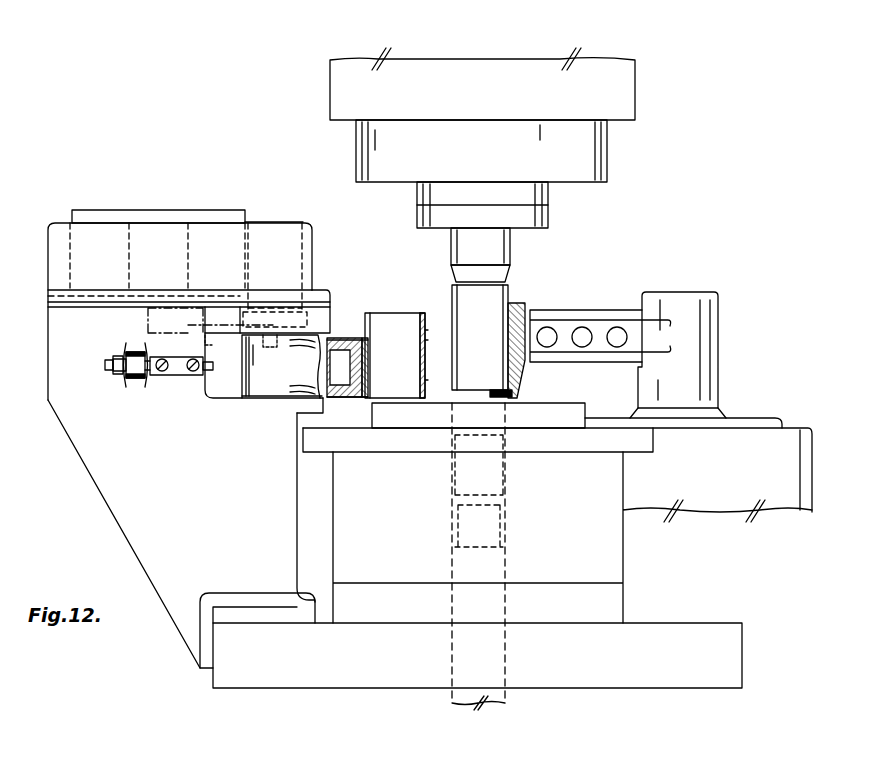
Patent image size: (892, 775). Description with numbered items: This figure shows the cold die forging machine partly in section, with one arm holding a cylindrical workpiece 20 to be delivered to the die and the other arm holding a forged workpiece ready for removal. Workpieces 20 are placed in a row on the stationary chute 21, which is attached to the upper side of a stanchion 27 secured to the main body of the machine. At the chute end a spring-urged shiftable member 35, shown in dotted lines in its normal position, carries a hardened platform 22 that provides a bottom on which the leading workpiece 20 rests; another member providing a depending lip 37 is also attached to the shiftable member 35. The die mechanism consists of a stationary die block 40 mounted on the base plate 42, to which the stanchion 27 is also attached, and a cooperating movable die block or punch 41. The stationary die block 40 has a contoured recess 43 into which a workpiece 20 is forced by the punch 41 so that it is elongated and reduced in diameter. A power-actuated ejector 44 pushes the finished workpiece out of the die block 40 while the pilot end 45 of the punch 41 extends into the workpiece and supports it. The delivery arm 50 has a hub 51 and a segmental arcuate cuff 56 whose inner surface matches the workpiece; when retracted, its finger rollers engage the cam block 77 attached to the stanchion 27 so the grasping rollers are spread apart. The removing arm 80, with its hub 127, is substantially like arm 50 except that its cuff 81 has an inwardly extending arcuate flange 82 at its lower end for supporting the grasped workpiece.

The cylindrical workpiece 20 is at (105, 210).
The stationary chute 21 is at (65, 199).
The platform 22 is at (262, 312).
The stanchion 27 is at (120, 498).
The shiftable member 35 is at (148, 318).
The depending lip 37 is at (262, 366).
The stationary die block 40 is at (613, 552).
The movable die block 41 is at (608, 166).
The base plate 42 is at (709, 683).
The recess 43 is at (449, 490).
The ejector 44 is at (500, 603).
The pilot end 45 is at (460, 274).
The arm 50 is at (356, 340).
The hub 51 is at (270, 383).
The cuff 56 is at (363, 400).
The cam block 77 is at (182, 371).
The workpiece removing arm 80 is at (599, 310).
The cuff 81 is at (524, 375).
The arcuate flange 82 is at (500, 391).
The hub 127 is at (700, 313).